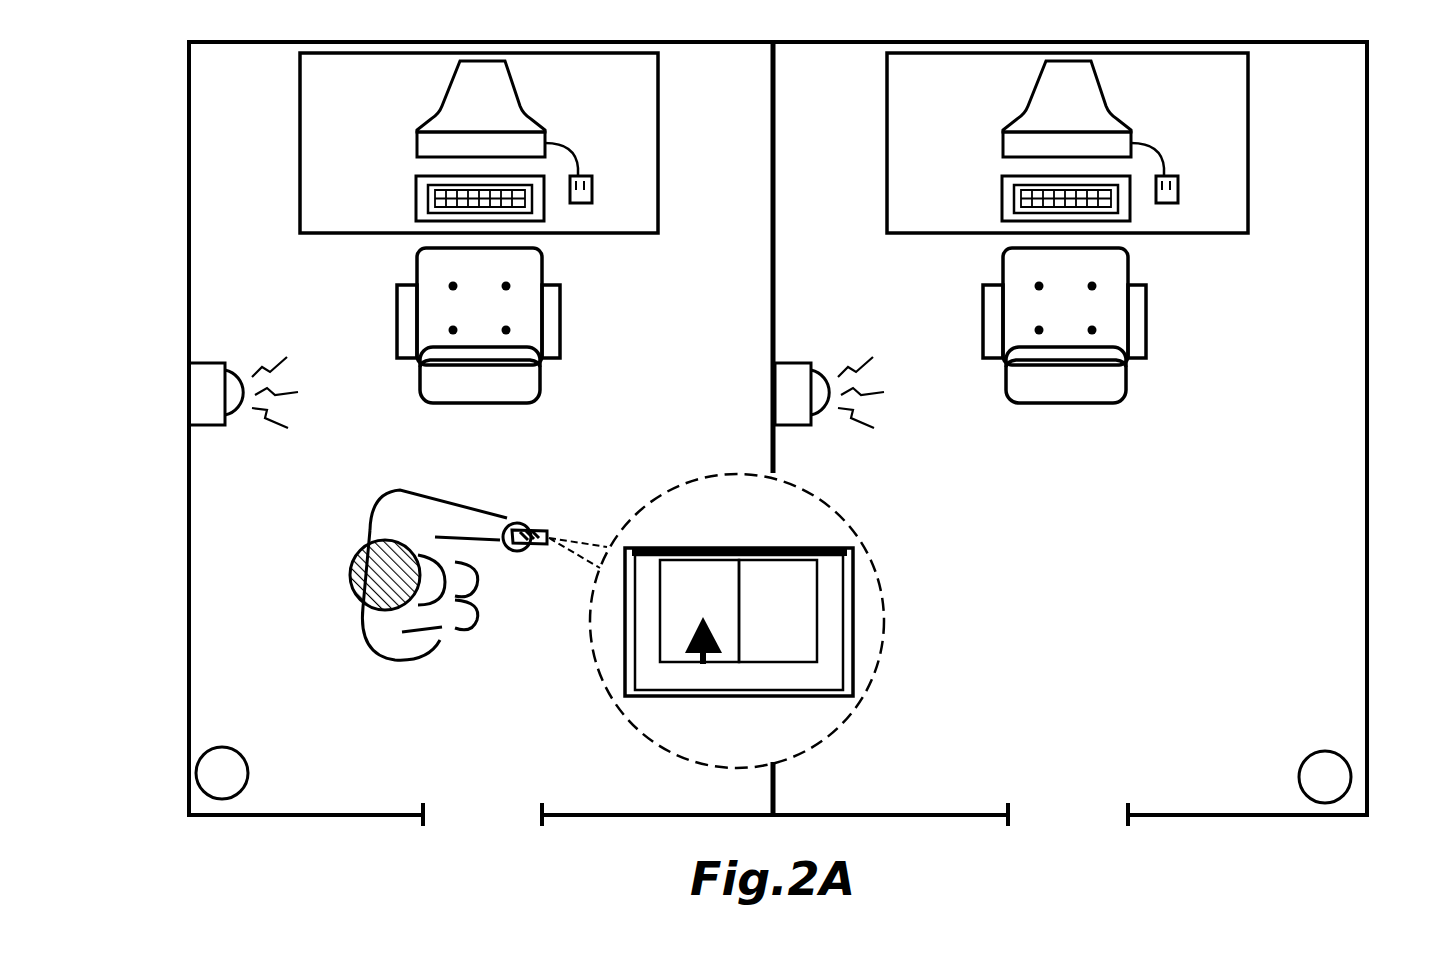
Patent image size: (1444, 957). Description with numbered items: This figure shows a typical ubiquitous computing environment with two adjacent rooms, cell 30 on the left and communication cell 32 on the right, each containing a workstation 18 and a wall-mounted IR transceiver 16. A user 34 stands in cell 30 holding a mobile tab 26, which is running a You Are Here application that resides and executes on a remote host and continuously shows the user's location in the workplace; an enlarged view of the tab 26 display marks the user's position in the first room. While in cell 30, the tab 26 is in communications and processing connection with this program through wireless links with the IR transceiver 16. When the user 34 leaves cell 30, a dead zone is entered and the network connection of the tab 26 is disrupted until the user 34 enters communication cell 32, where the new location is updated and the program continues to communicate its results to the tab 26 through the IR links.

The infrared transceiver 16 is at (205, 362).
The workstation 18 is at (478, 86).
The tab 26 is at (535, 527).
The cell 30 is at (222, 116).
The communication cell 32 is at (1330, 120).
The user 34 is at (420, 505).